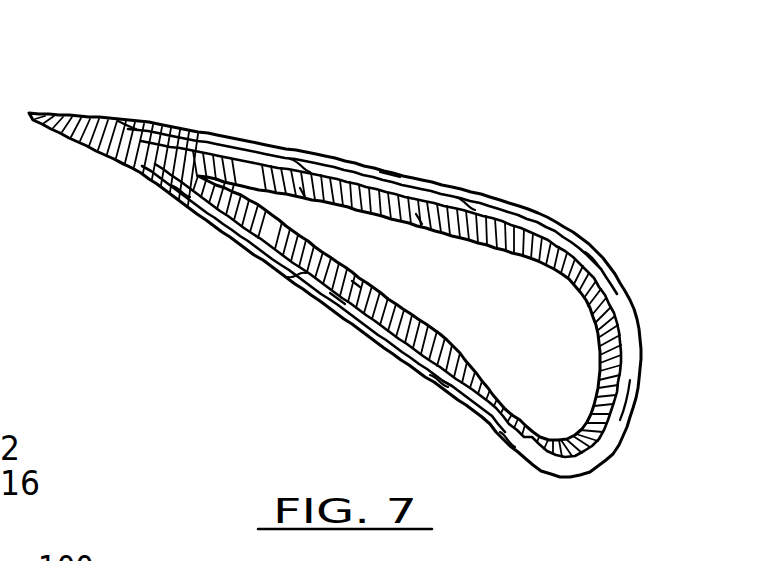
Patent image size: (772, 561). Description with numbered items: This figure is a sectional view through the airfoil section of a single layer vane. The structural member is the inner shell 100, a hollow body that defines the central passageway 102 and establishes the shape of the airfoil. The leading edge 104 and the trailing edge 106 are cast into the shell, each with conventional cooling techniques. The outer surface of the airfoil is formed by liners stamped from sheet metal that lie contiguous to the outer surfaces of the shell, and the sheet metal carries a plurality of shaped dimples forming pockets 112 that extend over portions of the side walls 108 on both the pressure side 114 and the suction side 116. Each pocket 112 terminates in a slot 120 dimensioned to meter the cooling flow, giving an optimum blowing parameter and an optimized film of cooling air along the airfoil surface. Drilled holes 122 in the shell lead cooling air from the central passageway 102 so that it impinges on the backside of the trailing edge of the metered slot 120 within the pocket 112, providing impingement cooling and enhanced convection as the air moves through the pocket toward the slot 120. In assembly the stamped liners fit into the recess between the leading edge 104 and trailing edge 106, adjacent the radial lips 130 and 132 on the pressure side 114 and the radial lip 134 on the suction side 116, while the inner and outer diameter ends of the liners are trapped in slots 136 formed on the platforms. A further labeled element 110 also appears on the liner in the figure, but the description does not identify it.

The inner shell 100 is at (470, 366).
The central passageway 102 is at (530, 326).
The leading edge 104 is at (630, 423).
The trailing edge 106 is at (53, 110).
The side walls 108 is at (510, 204).
The concave side sheet 110 is at (377, 337).
The pockets 112 is at (307, 170).
The pressure side 114 is at (337, 305).
The suction side 116 is at (390, 170).
The slot 120 is at (177, 197).
The drilled holes 122 is at (418, 215).
The radial lip 130 is at (497, 440).
The radial lip 132 is at (110, 160).
The radial lip 134 is at (633, 393).
The slot 136 is at (117, 120).